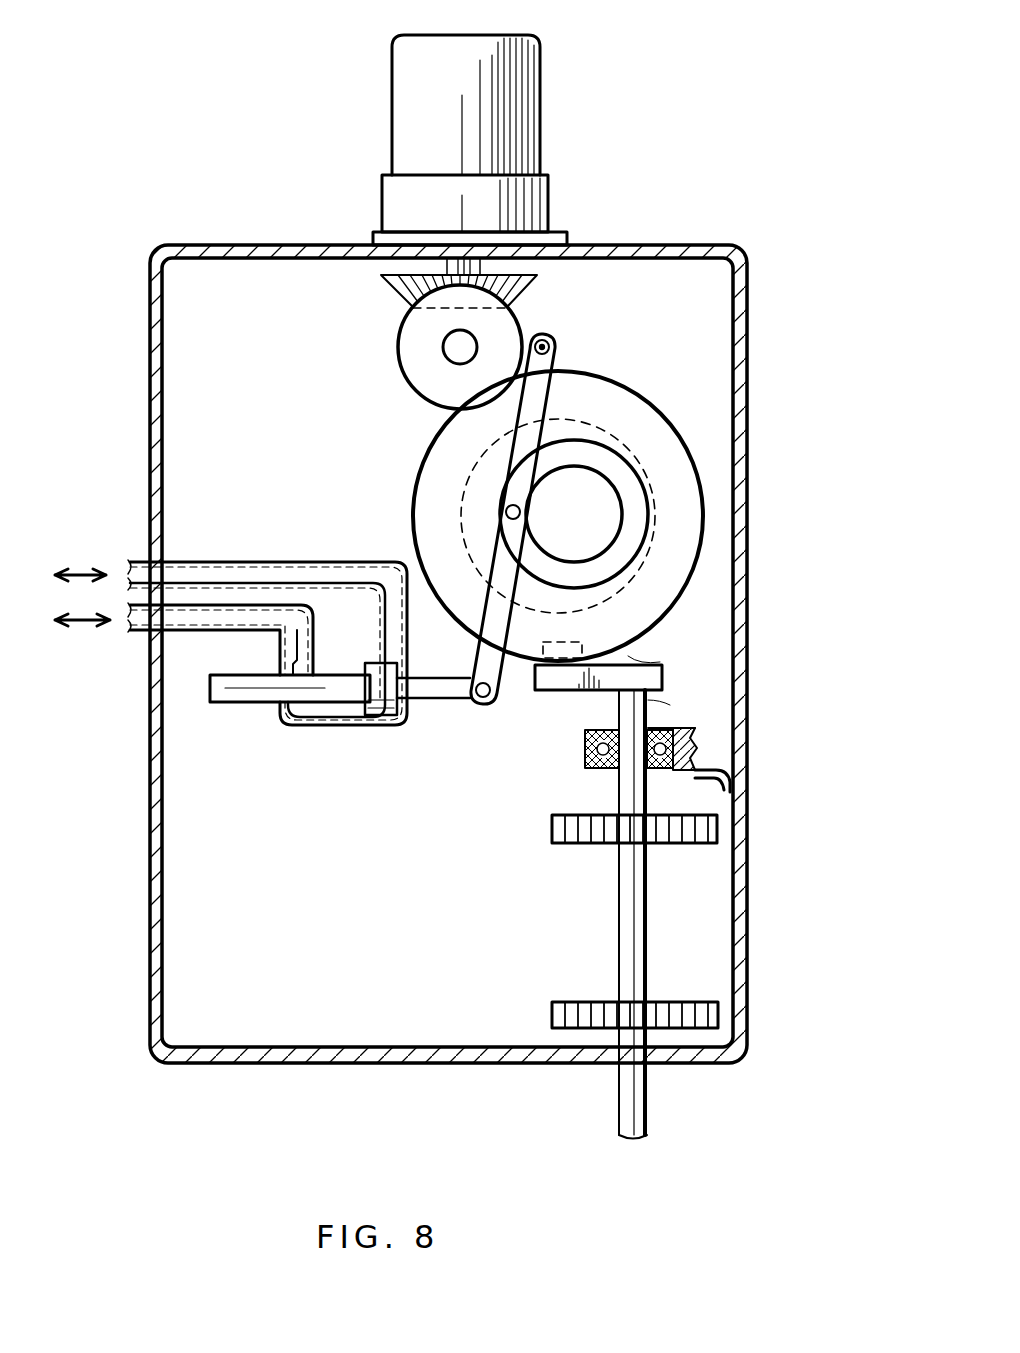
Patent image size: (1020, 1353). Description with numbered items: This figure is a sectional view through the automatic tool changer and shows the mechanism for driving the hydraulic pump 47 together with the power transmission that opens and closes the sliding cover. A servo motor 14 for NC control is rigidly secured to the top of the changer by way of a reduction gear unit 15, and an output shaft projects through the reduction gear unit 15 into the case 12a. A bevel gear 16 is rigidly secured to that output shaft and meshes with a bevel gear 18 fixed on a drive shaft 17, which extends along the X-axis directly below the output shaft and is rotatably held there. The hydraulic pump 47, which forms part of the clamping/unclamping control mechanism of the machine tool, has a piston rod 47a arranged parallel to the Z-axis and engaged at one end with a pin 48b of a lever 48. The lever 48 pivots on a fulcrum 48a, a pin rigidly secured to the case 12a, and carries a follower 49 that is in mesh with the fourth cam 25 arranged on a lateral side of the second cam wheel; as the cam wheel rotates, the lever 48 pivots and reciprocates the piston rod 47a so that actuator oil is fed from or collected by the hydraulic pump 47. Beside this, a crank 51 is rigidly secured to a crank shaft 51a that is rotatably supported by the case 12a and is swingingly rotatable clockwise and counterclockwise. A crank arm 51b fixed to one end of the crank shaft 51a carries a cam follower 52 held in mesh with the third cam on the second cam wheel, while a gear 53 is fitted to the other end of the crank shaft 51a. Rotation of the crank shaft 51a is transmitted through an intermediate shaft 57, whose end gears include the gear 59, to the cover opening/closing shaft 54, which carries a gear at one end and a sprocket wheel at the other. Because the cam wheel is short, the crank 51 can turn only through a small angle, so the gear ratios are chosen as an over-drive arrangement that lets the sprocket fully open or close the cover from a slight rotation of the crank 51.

The ATC case 12a is at (658, 247).
The servo motor 14 is at (520, 76).
The reduction gear unit 15 is at (532, 205).
The bevel gear 16 is at (402, 298).
The drive shaft 17 is at (446, 355).
The bevel gear 18 is at (402, 343).
The fourth cam 25 is at (612, 478).
The hydraulic pump 47 is at (335, 727).
The piston rod 47a is at (440, 705).
The lever 48 is at (553, 396).
The fulcrum 48a is at (543, 337).
The pin 48b is at (485, 702).
The follower 49 is at (508, 508).
The crank 51 is at (672, 676).
The crank shaft 51a is at (640, 712).
The crank arm 51b is at (645, 652).
The cam follower 52 is at (590, 650).
The gear 53 is at (712, 830).
The cover opening/closing shaft 54 is at (640, 1118).
The intermediate shaft 57 is at (628, 900).
The gear 59 is at (690, 1010).